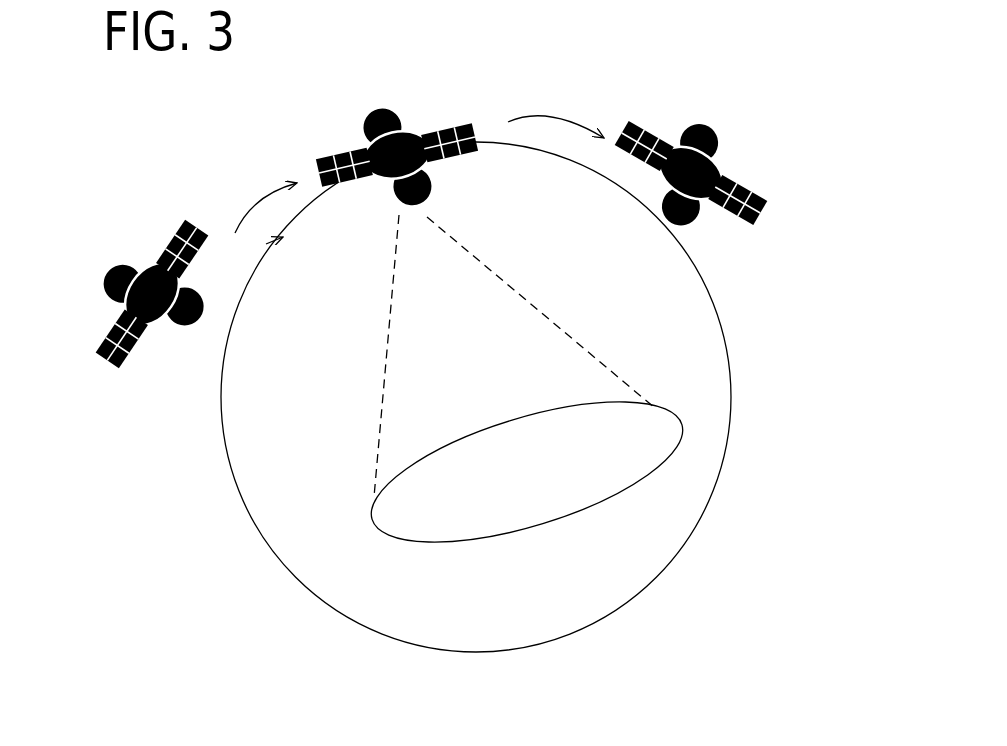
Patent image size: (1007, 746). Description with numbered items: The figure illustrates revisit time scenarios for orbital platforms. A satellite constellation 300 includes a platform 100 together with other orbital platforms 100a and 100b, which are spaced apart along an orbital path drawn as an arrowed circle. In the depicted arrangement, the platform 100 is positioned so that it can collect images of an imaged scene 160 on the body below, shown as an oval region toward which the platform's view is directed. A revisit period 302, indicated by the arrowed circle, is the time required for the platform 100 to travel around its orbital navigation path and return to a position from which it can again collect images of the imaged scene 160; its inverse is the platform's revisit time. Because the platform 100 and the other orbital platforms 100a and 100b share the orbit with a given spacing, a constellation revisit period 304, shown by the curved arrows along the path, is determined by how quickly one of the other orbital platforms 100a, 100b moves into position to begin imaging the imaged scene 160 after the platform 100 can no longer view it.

The platform 100 is at (415, 97).
The other orbital platform 100a is at (133, 238).
The other orbital platform 100b is at (728, 112).
The imaged scene 160 is at (627, 465).
The satellite constellation 300 is at (745, 327).
The revisit period 302 is at (320, 288).
The constellation revisit period 304 is at (255, 202).